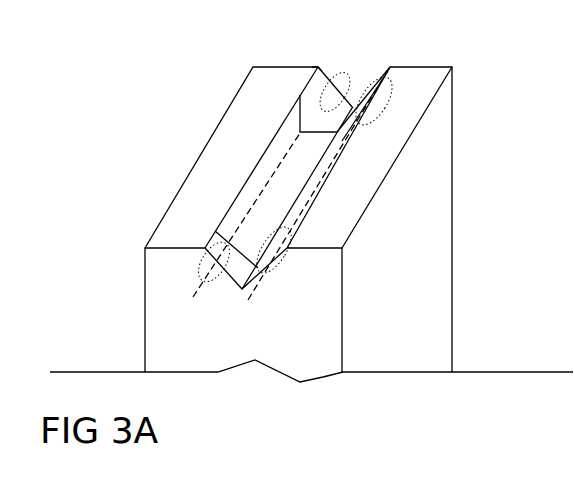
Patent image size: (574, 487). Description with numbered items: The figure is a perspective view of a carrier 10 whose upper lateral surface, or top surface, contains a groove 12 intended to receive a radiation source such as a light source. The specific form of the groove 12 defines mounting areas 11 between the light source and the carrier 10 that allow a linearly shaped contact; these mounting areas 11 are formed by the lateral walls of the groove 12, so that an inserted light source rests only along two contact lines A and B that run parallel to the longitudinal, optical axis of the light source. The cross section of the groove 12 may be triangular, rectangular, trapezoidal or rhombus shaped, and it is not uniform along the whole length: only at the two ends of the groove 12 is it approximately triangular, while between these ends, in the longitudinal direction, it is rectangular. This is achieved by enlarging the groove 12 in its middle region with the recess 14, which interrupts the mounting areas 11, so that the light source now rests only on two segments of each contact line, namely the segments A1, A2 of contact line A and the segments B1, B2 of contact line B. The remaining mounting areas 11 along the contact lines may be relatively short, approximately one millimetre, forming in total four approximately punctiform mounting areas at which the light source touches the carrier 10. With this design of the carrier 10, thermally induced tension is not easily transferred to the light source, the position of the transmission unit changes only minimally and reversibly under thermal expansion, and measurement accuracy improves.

The carrier 10 is at (167, 303).
The mounting areas 11 is at (218, 230).
The groove 12 is at (235, 293).
The recess 14 is at (270, 138).
The contact line A is at (340, 70).
The segment of contact line A A1 is at (210, 283).
The segment of contact line A A2 is at (312, 67).
The contact line B is at (392, 65).
The segment of contact line B B1 is at (278, 262).
The segment of contact line B B2 is at (388, 93).